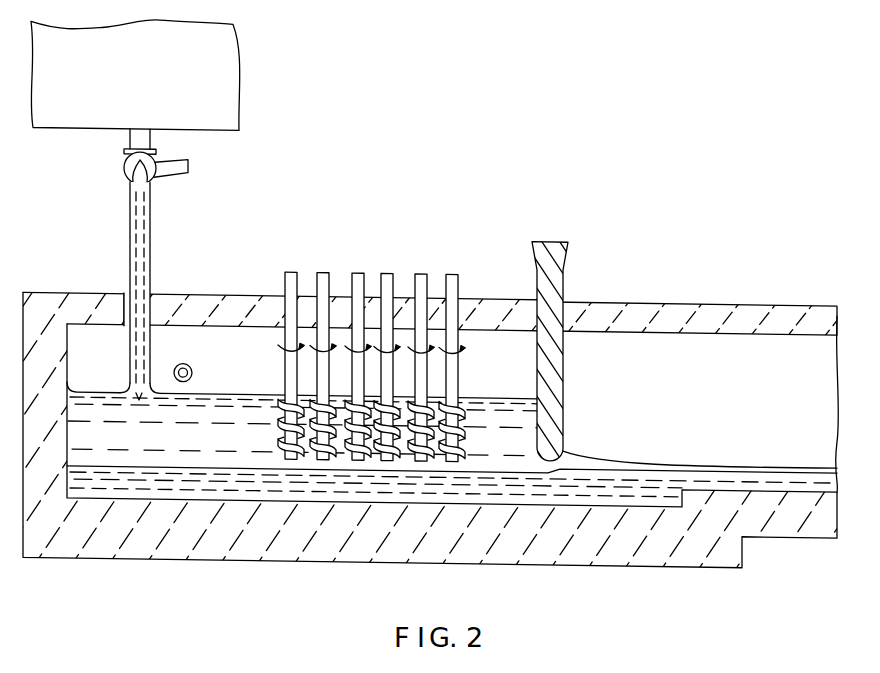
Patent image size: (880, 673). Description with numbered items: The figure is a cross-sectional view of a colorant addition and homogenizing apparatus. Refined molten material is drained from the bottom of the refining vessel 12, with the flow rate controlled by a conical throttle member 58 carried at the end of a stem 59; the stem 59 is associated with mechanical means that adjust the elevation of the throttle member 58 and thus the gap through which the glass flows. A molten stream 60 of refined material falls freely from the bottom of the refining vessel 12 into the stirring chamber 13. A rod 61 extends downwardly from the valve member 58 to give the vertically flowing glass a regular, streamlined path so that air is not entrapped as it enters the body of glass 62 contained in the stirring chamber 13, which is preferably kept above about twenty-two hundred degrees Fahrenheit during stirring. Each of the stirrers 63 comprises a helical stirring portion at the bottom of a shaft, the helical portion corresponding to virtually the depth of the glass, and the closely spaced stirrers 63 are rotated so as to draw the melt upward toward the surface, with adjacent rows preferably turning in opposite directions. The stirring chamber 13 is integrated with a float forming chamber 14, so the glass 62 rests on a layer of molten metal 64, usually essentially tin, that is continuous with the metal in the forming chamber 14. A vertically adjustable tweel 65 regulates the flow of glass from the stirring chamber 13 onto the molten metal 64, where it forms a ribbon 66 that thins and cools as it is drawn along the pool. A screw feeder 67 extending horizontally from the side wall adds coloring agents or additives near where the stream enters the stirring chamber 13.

The refining vessel 12 is at (242, 94).
The stirring chamber 13 is at (237, 286).
The float forming chamber 14 is at (717, 287).
The conical throttle member 58 is at (123, 166).
The stem 59 is at (188, 160).
The molten stream 60 is at (128, 356).
The rod 61 is at (130, 235).
The body of glass 62 is at (215, 390).
The stirrers 63 is at (357, 268).
The layer of molten metal 64 is at (175, 465).
The tweel 65 is at (565, 380).
The ribbon 66 is at (812, 456).
The screw feeder 67 is at (189, 362).